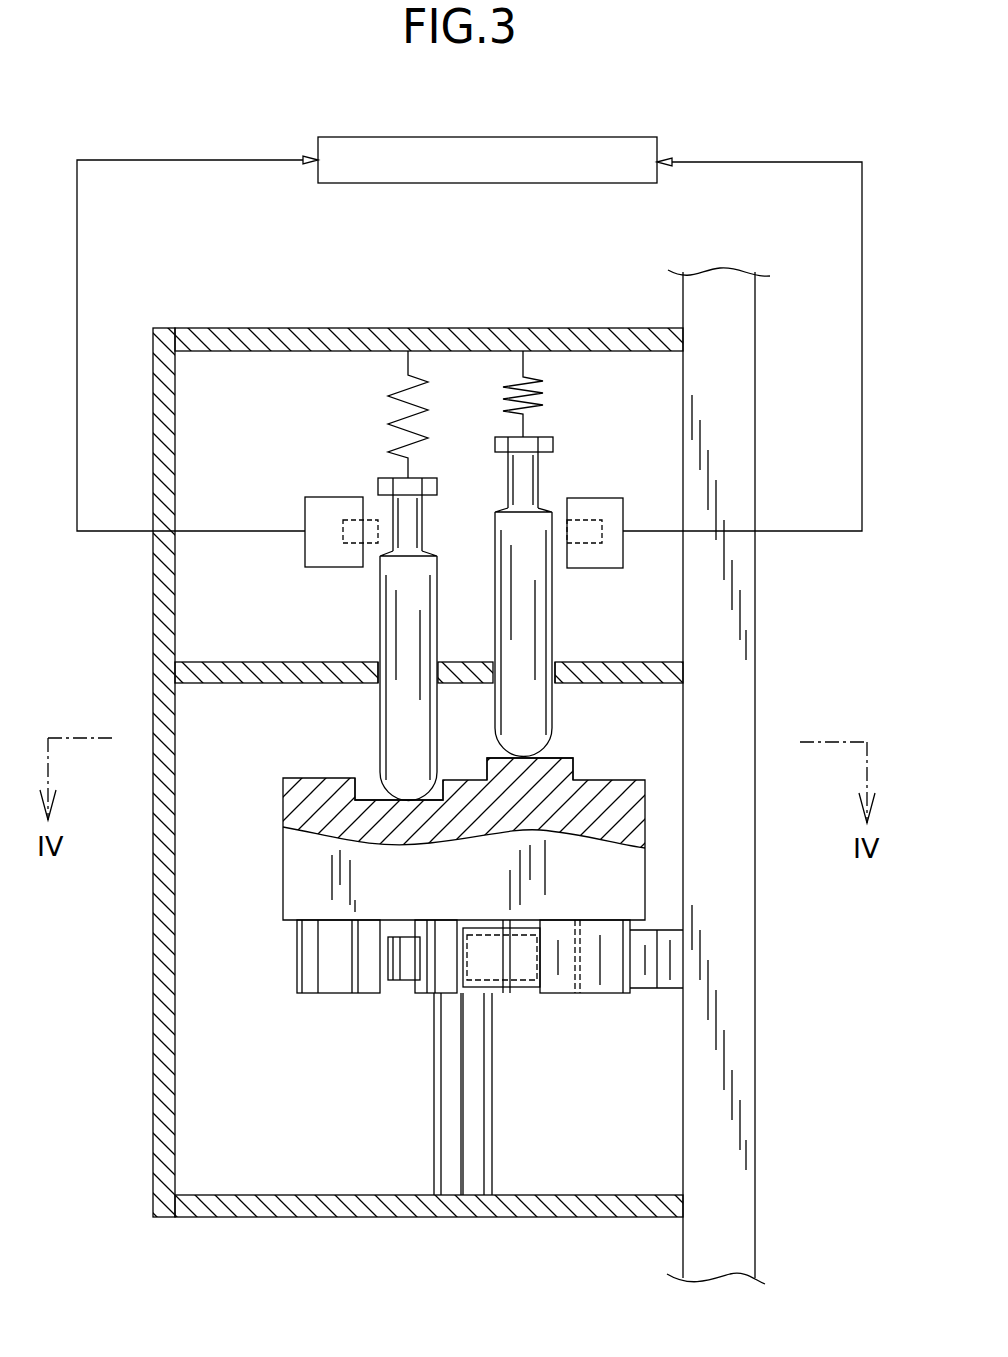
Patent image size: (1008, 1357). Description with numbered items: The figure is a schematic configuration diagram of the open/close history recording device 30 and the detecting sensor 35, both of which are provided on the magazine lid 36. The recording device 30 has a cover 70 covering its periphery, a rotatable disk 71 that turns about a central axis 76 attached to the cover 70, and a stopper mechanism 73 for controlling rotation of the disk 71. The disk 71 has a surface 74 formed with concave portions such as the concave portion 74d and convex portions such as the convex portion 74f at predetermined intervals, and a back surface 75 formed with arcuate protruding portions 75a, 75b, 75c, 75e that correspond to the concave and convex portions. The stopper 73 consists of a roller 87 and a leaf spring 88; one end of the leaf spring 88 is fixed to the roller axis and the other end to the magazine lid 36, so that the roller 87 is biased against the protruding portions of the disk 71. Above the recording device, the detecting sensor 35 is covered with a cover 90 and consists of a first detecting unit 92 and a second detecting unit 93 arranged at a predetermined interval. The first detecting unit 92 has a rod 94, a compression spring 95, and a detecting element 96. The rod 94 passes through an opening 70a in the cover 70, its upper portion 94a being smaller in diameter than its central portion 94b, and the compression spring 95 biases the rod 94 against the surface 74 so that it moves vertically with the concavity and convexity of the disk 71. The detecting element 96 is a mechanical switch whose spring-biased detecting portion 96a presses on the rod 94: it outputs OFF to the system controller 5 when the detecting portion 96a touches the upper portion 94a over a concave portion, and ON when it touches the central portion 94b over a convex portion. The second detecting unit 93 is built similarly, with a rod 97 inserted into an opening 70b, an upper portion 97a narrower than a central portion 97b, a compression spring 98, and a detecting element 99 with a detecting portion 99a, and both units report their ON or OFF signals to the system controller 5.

The system controller 5 is at (502, 137).
The open/close history recording device 30 is at (137, 1128).
The detecting sensor 35 is at (137, 603).
The magazine lid 36 is at (755, 1072).
The cover 70 is at (366, 772).
The opening 70a is at (378, 664).
The opening 70b is at (553, 664).
The disk 71 is at (422, 815).
The stopper mechanism 73 is at (447, 1008).
The surface 74 is at (455, 815).
The concave portion 74d is at (370, 778).
The convex portion 74f is at (565, 758).
The back surface 75 is at (460, 1000).
The protruding portion 75a is at (583, 994).
The protruding portion 75b is at (520, 994).
The protruding portion 75c is at (320, 994).
The protruding portion 75e is at (367, 994).
The central axis 76 is at (485, 1122).
The roller 87 is at (410, 994).
The leaf spring 88 is at (648, 994).
The cover 90 is at (153, 560).
The first detecting unit 92 is at (350, 456).
The second detecting unit 93 is at (592, 446).
The rod 94 is at (413, 639).
The upper portion 94a is at (423, 524).
The central portion 94b is at (435, 580).
The compression spring 95 is at (392, 387).
The detecting element 96 is at (318, 511).
The detecting portion 96a is at (363, 547).
The rod 97 is at (538, 597).
The upper portion 97a is at (538, 470).
The central portion 97b is at (552, 590).
The compression spring 98 is at (527, 380).
The detecting element 99 is at (617, 514).
The detecting portion 99a is at (567, 547).